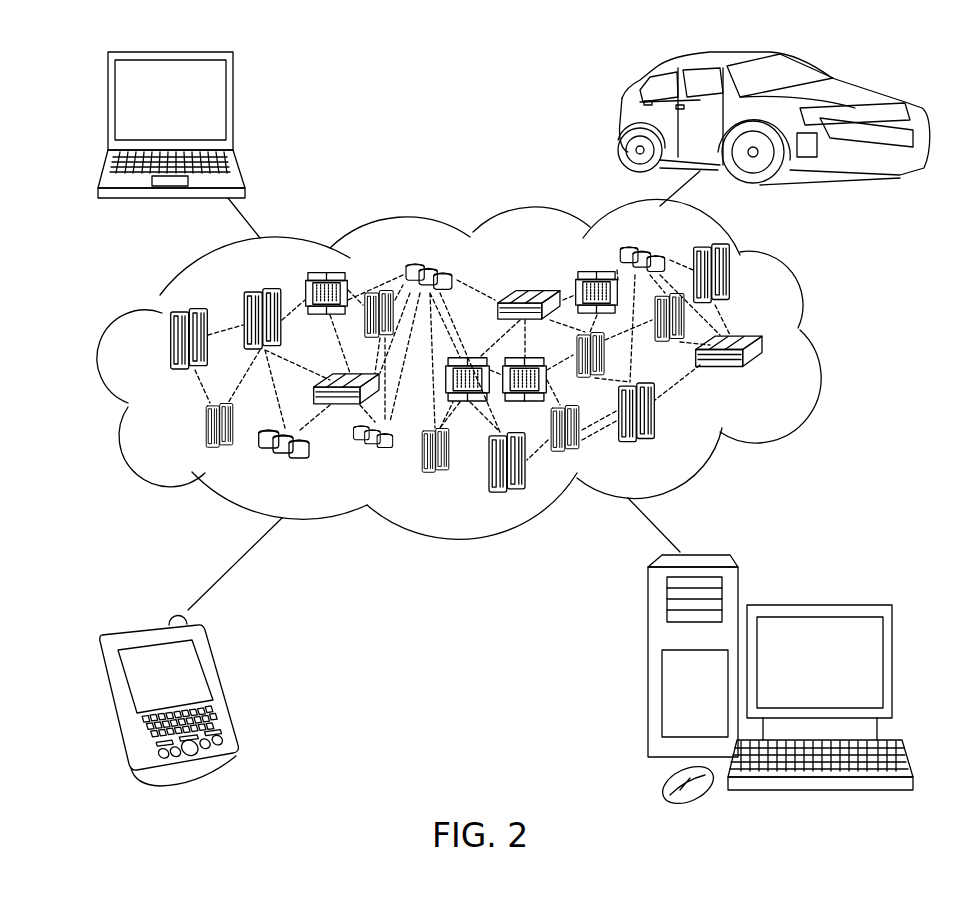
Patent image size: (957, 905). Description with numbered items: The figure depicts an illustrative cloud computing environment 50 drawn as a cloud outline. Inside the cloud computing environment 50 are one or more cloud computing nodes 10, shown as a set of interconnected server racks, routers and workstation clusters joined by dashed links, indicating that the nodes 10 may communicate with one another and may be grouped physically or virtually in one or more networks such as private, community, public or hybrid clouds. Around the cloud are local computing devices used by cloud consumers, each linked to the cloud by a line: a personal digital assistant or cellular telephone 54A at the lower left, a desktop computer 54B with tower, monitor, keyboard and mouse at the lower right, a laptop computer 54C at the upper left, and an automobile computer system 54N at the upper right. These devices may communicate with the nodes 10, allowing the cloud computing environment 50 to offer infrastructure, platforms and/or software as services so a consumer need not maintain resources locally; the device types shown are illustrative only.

The cloud computing node 10 is at (770, 375).
The cloud computing environment 50 is at (817, 349).
The personal digital assistant (PDA) or cellular telephone 54A is at (223, 688).
The desktop computer 54B is at (818, 602).
The laptop computer 54C is at (233, 108).
The automobile computer system 54N is at (620, 120).